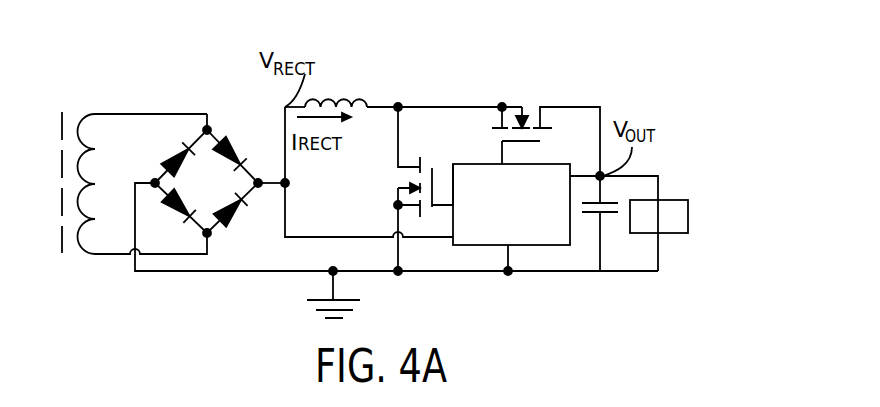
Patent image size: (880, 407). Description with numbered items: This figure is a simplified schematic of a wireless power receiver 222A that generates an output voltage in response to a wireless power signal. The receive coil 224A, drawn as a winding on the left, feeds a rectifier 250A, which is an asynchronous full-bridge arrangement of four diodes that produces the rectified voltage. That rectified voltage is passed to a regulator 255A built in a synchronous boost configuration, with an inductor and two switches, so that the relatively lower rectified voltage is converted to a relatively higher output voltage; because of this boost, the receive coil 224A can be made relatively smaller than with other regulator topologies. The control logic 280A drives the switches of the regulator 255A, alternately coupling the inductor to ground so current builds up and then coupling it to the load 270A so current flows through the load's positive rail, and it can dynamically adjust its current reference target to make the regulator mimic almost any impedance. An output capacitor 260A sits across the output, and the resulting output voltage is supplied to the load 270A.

The receive coil 224A is at (93, 257).
The rectifier 250A is at (230, 122).
The wireless power receiver 222A is at (386, 50).
The regulator 255A is at (432, 71).
The control logic 280A is at (553, 245).
The output capacitor 260A is at (610, 214).
The load 270A is at (688, 213).